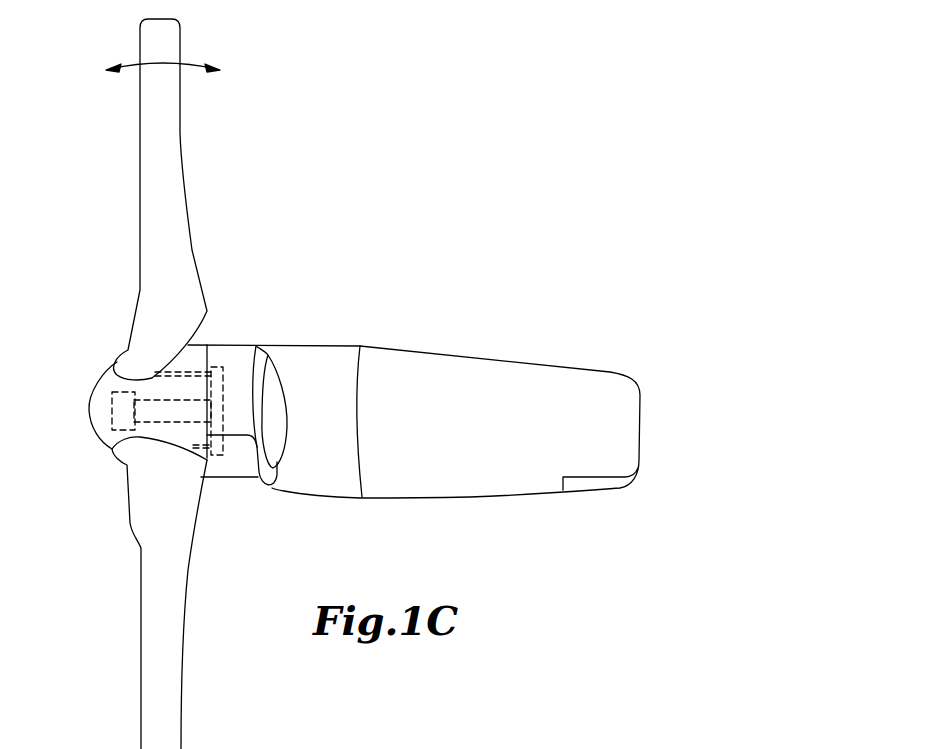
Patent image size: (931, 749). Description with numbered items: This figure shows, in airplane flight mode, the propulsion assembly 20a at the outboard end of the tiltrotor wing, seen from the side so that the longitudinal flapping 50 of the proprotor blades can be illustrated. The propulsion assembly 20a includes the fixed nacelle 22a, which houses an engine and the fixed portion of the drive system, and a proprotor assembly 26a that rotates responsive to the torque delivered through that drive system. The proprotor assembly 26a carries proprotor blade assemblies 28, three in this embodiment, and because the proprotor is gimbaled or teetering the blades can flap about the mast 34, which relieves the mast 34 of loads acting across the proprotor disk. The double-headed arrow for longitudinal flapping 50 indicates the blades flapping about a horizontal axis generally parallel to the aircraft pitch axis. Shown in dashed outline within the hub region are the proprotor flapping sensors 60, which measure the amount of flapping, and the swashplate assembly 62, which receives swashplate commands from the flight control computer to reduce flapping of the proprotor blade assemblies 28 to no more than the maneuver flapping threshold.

The propulsion assembly 20a is at (465, 352).
The fixed nacelle 22a is at (570, 390).
The proprotor assembly 26a is at (89, 439).
The proprotor blade assemblies 28 is at (140, 200).
The mast 34 is at (128, 413).
The longitudinal flapping 50 is at (191, 63).
The proprotor flapping sensors 60 is at (92, 393).
The swashplate assembly 62 is at (221, 363).